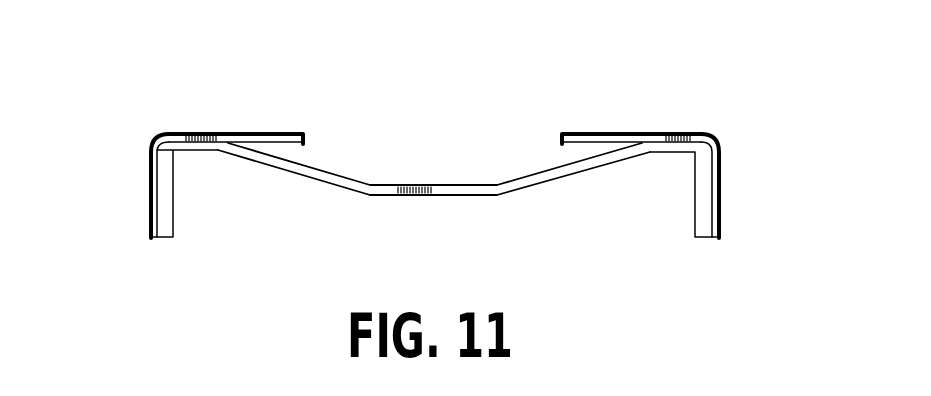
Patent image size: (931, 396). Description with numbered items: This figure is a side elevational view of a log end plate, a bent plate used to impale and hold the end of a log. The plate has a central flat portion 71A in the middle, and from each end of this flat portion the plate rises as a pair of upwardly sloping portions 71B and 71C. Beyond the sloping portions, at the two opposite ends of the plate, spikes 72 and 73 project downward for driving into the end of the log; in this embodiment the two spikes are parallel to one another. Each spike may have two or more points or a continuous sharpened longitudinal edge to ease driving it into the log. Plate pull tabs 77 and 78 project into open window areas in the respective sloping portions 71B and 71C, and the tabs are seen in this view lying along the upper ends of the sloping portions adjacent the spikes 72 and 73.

The central flat portion 71A is at (445, 185).
The upwardly sloping portion 71B is at (305, 166).
The upwardly sloping portion 71C is at (553, 182).
The spike 72 is at (150, 181).
The spike 73 is at (720, 178).
The plate pull tab 77 is at (267, 133).
The plate pull tab 78 is at (575, 135).